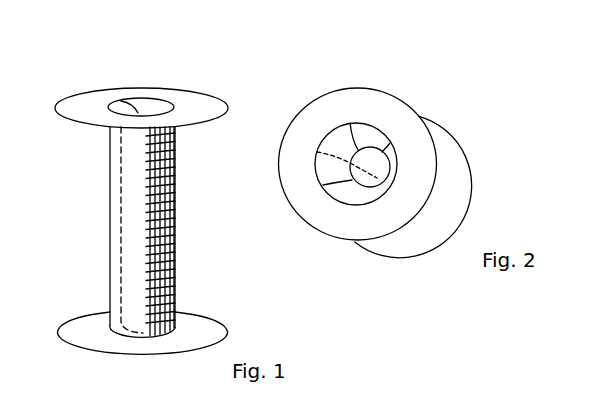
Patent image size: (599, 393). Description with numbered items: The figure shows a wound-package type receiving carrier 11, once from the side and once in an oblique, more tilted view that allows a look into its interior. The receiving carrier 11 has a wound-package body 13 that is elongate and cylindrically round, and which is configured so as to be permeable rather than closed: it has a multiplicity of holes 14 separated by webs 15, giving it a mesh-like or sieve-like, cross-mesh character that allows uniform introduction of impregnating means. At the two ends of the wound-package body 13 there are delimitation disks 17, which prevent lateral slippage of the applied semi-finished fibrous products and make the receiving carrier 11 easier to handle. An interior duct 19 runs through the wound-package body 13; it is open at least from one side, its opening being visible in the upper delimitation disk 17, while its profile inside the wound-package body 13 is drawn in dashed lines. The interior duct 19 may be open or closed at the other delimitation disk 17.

In FIG. 1, the receiving carrier 11 is at (187, 72).
In FIG. 2, the receiving carrier 11 is at (458, 90).
In FIG. 1, the wound-package body 13 is at (173, 237).
In FIG. 1, the holes 14 is at (173, 160).
In FIG. 1, the webs 15 is at (173, 178).
In FIG. 1, the delimitation disks 17 is at (86, 102).
In FIG. 2, the delimitation disks 17 is at (358, 88).
In FIG. 1, the interior duct 19 is at (146, 100).
In FIG. 2, the interior duct 19 is at (358, 183).